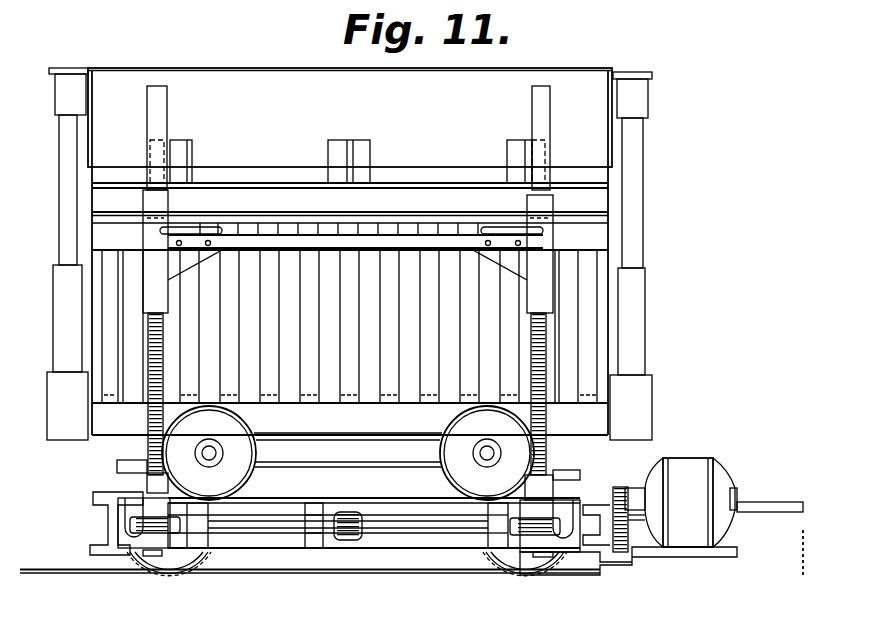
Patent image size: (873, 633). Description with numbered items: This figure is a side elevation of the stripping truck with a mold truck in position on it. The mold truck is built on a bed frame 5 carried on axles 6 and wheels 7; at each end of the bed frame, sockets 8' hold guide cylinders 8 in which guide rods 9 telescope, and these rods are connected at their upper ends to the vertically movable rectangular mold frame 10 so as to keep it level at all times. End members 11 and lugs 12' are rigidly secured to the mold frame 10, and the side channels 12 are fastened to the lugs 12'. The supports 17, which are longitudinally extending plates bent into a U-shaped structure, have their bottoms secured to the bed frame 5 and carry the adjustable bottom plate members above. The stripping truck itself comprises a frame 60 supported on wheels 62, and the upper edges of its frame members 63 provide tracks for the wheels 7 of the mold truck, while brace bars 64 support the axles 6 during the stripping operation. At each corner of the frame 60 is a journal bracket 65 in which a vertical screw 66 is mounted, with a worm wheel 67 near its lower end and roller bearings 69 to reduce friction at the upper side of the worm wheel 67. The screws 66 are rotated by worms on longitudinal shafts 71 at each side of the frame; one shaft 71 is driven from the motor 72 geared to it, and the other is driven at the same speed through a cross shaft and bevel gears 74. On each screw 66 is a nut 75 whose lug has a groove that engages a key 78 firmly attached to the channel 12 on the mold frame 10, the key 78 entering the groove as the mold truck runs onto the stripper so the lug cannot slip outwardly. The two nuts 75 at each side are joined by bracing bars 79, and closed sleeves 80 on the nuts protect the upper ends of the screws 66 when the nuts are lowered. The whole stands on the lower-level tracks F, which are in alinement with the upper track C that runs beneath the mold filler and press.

The mold frame 10 is at (350, 117).
The end members 11 is at (62, 67).
The guide rods 9 is at (59, 180).
The guide cylinders 8 is at (367, 320).
The sockets 8' is at (356, 406).
The bed frame 5 is at (350, 301).
The side channels 12 is at (350, 180).
The key 78 is at (407, 212).
The bracing bars 79 is at (288, 243).
The supports 17 is at (229, 331).
The closed sleeves 80 is at (152, 120).
The lugs 12' is at (351, 151).
The nut 75 is at (155, 268).
The vertical screw 66 is at (150, 358).
The wheels 7 is at (236, 438).
The axles 6 is at (210, 454).
The brace bars 64 is at (318, 473).
The frame members 63 is at (418, 498).
The frame 60 is at (237, 545).
The longitudinal shafts 71 is at (263, 527).
The bevel gears 74 is at (353, 541).
The journal bracket 65 is at (157, 488).
The roller bearings 69 is at (110, 507).
The worm wheel 67 is at (133, 525).
The wheels 62 is at (173, 560).
The motor 72 is at (628, 516).
The track C is at (781, 502).
The tracks F is at (53, 568).